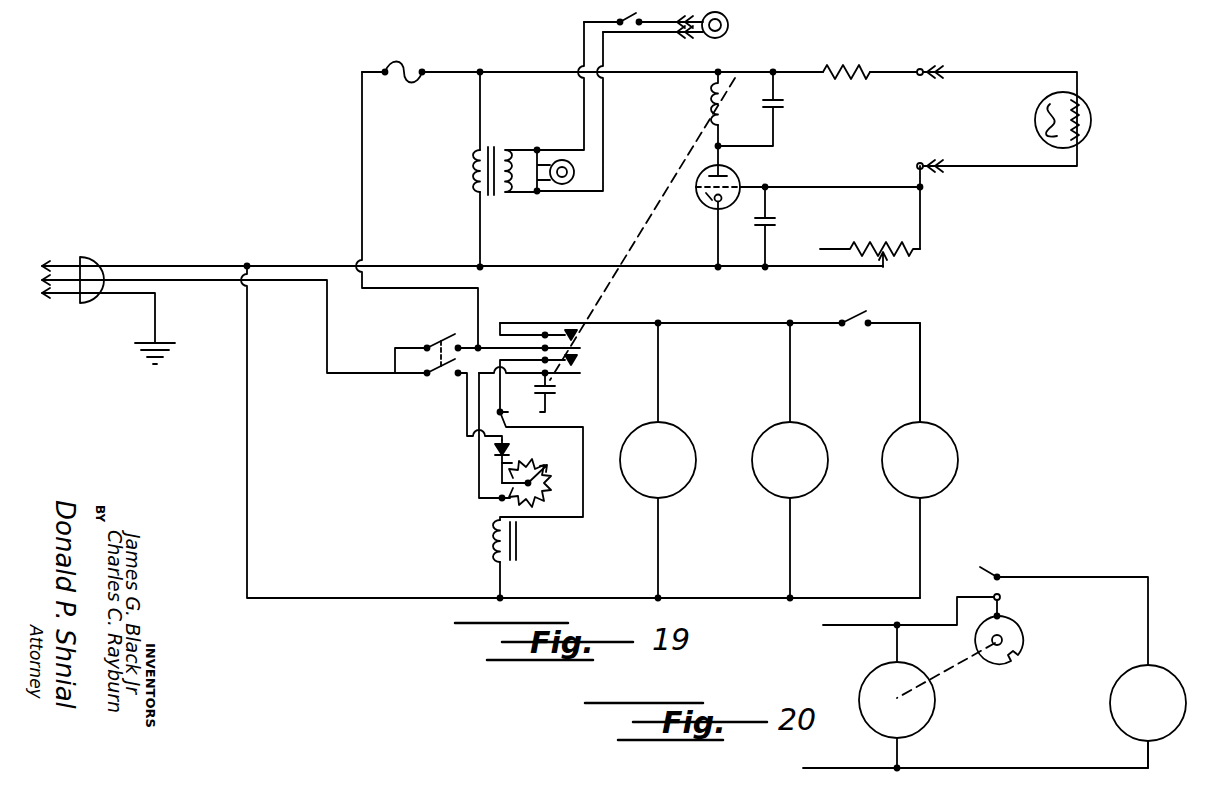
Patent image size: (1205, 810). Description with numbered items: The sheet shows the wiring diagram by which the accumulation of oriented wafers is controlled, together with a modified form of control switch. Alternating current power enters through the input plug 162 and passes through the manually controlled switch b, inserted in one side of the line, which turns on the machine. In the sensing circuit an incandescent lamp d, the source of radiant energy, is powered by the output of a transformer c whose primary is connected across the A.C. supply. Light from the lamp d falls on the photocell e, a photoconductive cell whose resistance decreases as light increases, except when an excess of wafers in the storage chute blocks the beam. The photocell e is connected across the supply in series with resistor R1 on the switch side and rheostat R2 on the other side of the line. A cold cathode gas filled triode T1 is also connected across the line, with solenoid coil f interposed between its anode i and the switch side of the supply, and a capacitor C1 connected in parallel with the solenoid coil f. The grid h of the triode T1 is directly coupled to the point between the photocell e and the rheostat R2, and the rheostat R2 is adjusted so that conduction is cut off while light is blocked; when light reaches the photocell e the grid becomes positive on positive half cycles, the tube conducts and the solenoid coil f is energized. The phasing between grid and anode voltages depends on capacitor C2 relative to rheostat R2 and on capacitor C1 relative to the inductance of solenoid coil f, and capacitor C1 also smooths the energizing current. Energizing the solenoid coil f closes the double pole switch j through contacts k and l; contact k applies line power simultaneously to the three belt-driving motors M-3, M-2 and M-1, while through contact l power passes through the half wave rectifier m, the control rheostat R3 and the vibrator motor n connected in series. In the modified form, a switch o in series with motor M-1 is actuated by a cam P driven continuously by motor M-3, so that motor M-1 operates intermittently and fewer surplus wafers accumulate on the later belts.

In FIG. 19, the input plug 162 is at (90, 304).
In FIG. 19, the manually controlled switch b is at (410, 380).
In FIG. 19, the transformer c is at (490, 150).
In FIG. 19, the incandescent lamp d is at (725, 35).
In FIG. 19, the photocell e is at (1092, 122).
In FIG. 19, the solenoid coil f is at (710, 100).
In FIG. 19, the grid h is at (704, 202).
In FIG. 19, the anode i is at (710, 170).
In FIG. 19, the double pole switch j is at (518, 358).
In FIG. 19, the contact k is at (585, 340).
In FIG. 19, the contact l is at (585, 366).
In FIG. 19, the half wave rectifier m is at (512, 447).
In FIG. 19, the vibrator motor n is at (518, 556).
In FIG. 19, the switch o is at (870, 318).
In FIG. 20, the switch o is at (1002, 568).
In FIG. 20, the cam P is at (1016, 638).
In FIG. 19, the resistor R1 is at (830, 70).
In FIG. 19, the rheostat R2 is at (880, 247).
In FIG. 19, the control rheostat R3 is at (548, 490).
In FIG. 19, the capacitor C1 is at (785, 104).
In FIG. 19, the capacitor C2 is at (778, 224).
In FIG. 19, the cold cathode triode T1 is at (740, 180).
In FIG. 19, the belt-driving motor M-1 is at (920, 460).
In FIG. 20, the belt-driving motor M-1 is at (1148, 716).
In FIG. 19, the belt-driving motor M-2 is at (790, 460).
In FIG. 19, the belt-driving motor M-3 is at (658, 460).
In FIG. 20, the belt-driving motor M-3 is at (897, 696).